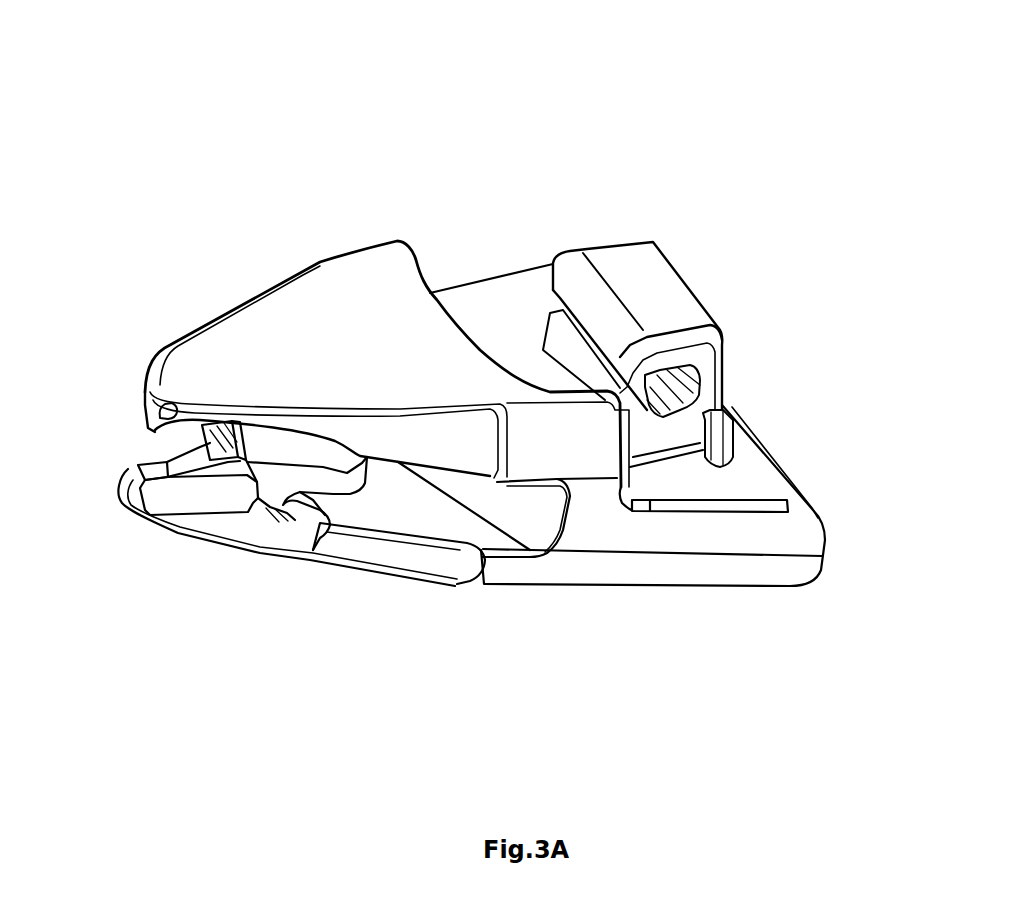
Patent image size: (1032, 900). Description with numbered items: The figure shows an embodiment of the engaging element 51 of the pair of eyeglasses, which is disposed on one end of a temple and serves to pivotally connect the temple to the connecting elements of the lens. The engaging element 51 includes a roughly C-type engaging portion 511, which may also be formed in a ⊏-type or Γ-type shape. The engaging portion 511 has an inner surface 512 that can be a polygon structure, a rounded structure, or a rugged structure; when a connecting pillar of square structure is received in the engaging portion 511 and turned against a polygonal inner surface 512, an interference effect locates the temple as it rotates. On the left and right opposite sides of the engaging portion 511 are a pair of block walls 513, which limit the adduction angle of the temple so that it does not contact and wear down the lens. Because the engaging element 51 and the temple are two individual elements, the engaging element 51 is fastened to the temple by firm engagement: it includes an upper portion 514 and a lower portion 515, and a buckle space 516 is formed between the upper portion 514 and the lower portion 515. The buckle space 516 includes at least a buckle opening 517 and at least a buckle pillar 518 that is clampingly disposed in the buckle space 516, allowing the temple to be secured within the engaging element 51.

The engaging element 51 is at (170, 41).
The engaging portion 511 is at (635, 277).
The inner surface 512 is at (668, 393).
The block walls 513 is at (718, 410).
The upper portion 514 is at (207, 367).
The lower portion 515 is at (735, 568).
The buckle space 516 is at (397, 487).
The buckle opening 517 is at (143, 443).
The buckle pillar 518 is at (286, 462).